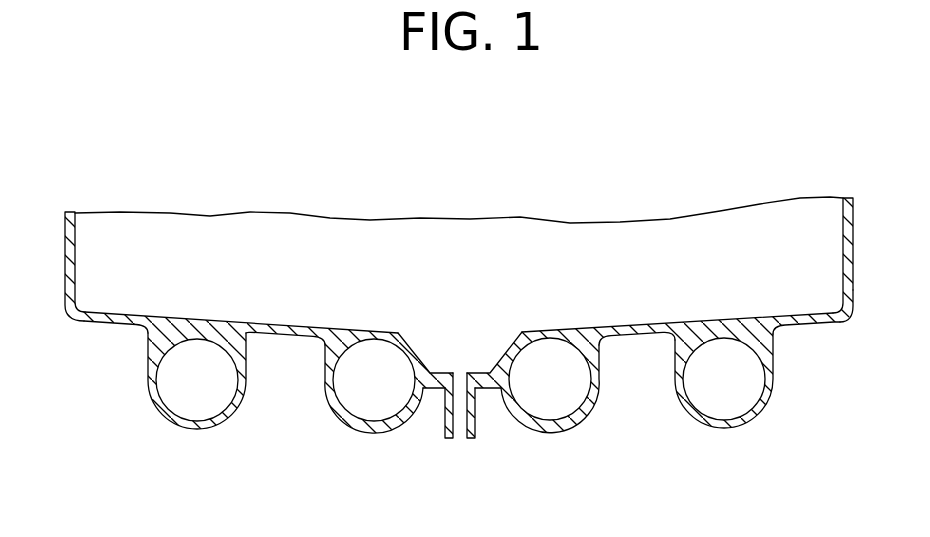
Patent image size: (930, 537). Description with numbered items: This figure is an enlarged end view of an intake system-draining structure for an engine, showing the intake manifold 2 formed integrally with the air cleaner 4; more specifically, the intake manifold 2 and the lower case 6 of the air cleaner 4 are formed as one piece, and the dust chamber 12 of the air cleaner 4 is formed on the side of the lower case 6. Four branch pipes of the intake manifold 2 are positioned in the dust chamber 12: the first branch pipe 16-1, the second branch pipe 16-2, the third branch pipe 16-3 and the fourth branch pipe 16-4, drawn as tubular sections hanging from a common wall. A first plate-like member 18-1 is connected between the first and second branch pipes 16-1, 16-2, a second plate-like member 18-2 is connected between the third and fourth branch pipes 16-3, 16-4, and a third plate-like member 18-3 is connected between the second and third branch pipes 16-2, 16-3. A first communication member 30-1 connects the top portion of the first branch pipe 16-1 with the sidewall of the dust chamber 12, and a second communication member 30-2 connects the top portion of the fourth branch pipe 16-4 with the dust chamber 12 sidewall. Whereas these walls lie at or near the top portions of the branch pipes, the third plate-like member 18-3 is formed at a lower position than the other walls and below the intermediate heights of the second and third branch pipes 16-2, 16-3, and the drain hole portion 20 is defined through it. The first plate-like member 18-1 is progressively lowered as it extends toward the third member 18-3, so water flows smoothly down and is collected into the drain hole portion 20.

The intake manifold 2 is at (697, 424).
The air cleaner 4 is at (855, 236).
The lower case 6 is at (858, 292).
The dust chamber 12 is at (105, 275).
The first branch pipe 16-1 is at (205, 428).
The second branch pipe 16-2 is at (338, 419).
The third branch pipe 16-3 is at (565, 426).
The fourth branch pipe 16-4 is at (752, 419).
The first plate-like member 18-1 is at (278, 332).
The second plate-like member 18-2 is at (634, 331).
The third plate-like member 18-3 is at (432, 372).
The drain hole portion 20 is at (460, 383).
The first communication member 30-1 is at (117, 327).
The second communication member 30-2 is at (812, 330).